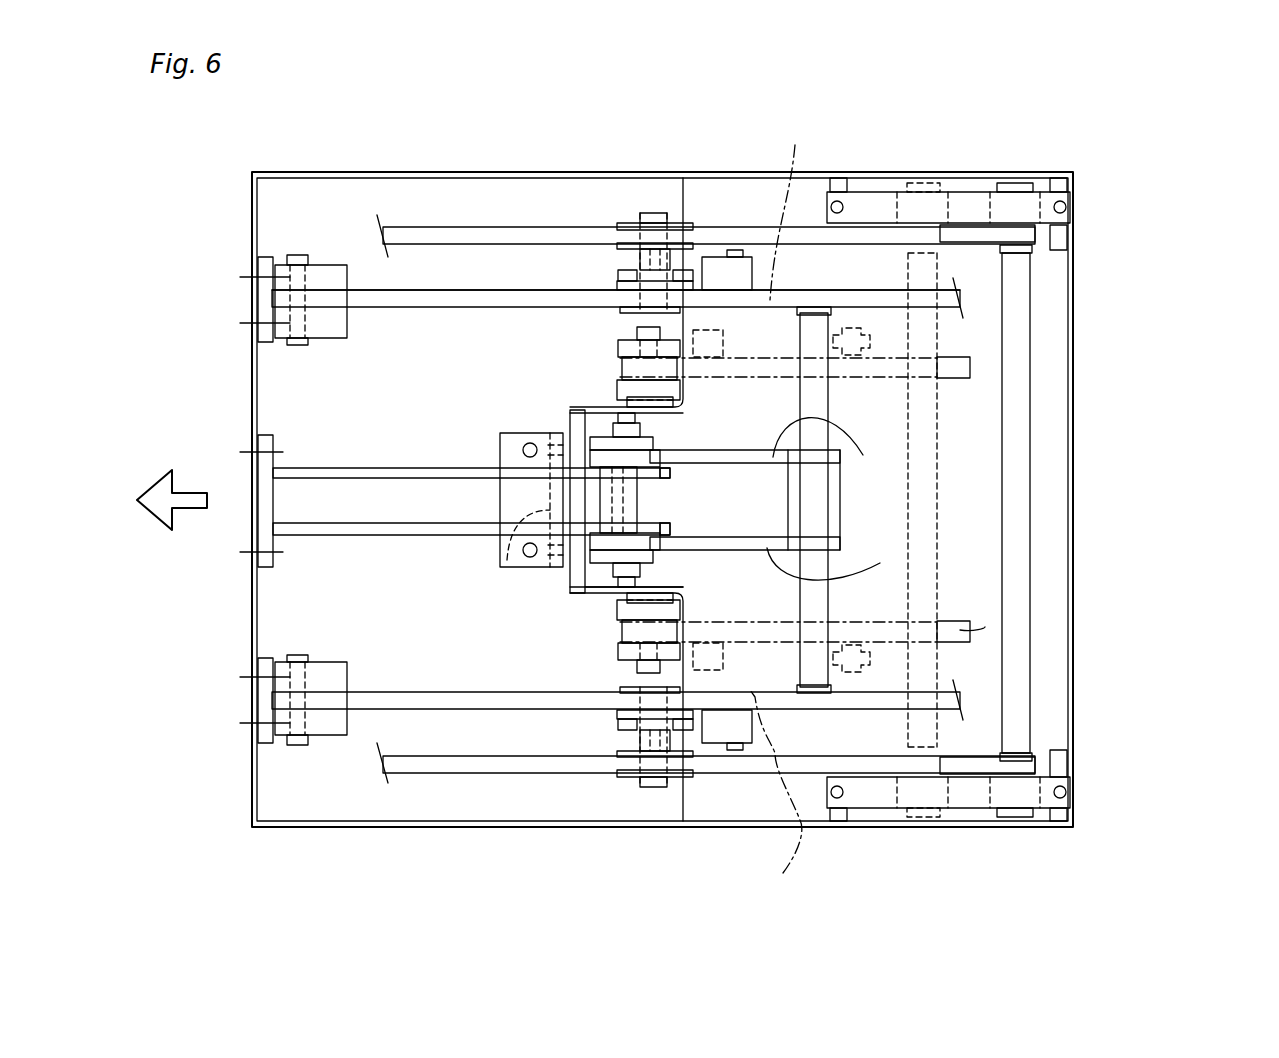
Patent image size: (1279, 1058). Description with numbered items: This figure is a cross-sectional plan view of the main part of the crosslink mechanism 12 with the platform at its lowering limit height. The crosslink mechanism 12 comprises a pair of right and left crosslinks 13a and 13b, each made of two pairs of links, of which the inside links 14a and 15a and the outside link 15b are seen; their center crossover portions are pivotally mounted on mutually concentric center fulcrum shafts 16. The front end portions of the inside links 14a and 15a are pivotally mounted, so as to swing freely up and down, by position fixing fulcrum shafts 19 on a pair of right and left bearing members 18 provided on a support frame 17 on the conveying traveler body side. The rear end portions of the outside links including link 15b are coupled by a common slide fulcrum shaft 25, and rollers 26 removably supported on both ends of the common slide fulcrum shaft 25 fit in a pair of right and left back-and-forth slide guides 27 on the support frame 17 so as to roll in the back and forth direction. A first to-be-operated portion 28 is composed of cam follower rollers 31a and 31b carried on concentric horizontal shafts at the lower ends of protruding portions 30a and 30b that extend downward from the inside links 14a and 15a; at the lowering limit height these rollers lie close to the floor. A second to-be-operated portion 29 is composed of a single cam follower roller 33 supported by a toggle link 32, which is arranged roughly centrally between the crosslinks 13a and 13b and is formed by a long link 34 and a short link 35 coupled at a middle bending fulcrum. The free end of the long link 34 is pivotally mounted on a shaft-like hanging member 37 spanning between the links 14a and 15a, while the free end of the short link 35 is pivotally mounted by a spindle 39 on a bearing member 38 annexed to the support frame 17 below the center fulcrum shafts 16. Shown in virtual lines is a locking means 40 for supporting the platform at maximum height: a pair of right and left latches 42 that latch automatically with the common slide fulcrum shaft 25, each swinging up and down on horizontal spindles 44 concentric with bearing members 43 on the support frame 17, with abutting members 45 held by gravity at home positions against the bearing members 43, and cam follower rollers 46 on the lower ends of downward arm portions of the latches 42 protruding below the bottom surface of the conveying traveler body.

The crosslink mechanism 12 is at (1035, 580).
The crosslink 13a is at (585, 773).
The crosslink 13b is at (543, 224).
The link 14a is at (437, 703).
The link 15a is at (422, 300).
The link 15b is at (470, 237).
The center fulcrum shaft 16 is at (650, 252).
The support frame 17 is at (250, 228).
The bearing member 18 is at (325, 328).
The position fixing fulcrum shaft 19 is at (293, 347).
The common slide fulcrum shaft 25 is at (927, 462).
The roller 26 is at (910, 205).
The back-and-forth slide guide 27 is at (967, 190).
The first to-be-operated portion 28 is at (690, 265).
The second to-be-operated portion 29 is at (530, 493).
The protruding portion 30a is at (790, 797).
The protruding portion 30b is at (797, 207).
The cam follower roller 31a is at (727, 727).
The cam follower roller 31b is at (745, 268).
The toggle link 32 is at (717, 457).
The cam follower roller 33 is at (503, 563).
The long link 34 is at (800, 403).
The short link 35 is at (598, 440).
The shaft-like hanging member 37 is at (818, 428).
The bearing member 38 is at (683, 530).
The spindle 39 is at (593, 573).
The locking means 40 is at (985, 627).
The latch 42 is at (960, 367).
The bearing member 43 is at (617, 653).
The horizontal spindle 44 is at (620, 343).
The abutting member 45 is at (708, 343).
The cam follower roller 46 is at (863, 343).